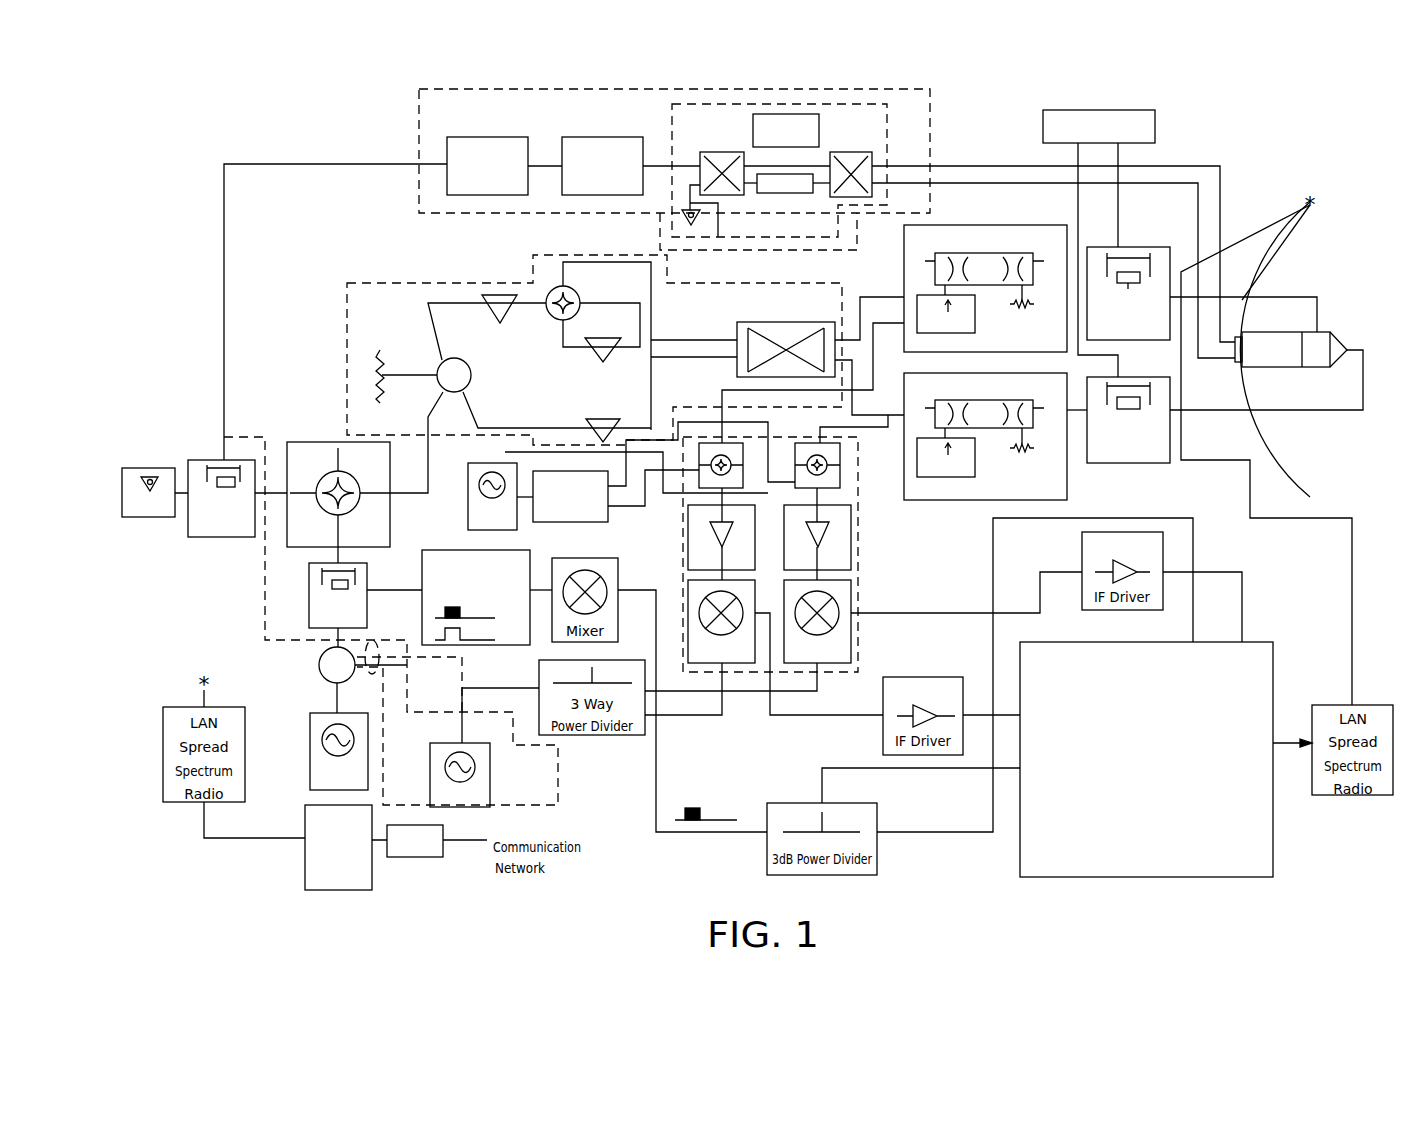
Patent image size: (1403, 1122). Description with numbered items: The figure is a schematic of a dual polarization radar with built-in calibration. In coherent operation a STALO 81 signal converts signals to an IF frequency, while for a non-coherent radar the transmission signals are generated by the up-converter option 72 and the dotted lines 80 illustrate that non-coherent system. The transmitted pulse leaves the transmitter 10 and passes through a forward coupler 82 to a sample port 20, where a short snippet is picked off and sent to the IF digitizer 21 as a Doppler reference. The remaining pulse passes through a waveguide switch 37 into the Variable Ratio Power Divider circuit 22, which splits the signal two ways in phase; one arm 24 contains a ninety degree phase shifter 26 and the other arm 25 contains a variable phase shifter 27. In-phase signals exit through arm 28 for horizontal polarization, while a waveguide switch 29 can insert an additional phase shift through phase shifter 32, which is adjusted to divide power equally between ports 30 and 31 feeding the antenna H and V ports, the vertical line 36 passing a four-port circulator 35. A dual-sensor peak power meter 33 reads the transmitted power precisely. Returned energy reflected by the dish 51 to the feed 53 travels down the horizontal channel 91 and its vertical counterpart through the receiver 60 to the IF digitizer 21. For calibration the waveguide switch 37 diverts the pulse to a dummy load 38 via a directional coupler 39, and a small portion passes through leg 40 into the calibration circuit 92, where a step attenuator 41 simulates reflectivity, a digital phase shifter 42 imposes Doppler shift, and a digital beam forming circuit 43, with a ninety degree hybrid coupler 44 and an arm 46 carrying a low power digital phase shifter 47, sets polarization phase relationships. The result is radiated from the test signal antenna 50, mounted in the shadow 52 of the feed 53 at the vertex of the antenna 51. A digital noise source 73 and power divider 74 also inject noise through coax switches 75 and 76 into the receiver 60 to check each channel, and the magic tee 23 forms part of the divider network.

The transmitter 10 is at (310, 737).
The sample port 20 is at (422, 553).
The IF digitizer 21 is at (1020, 862).
The Variable Ratio Power Divider (VRPD) circuit 22 is at (347, 340).
The magic tee 23 is at (437, 363).
The arm 24 is at (440, 332).
The arm 25 is at (470, 415).
The 90 degree phase shifter 26 is at (508, 318).
The variable phase shifter 27 is at (598, 418).
The arm 28 is at (880, 297).
The waveguide switch 29 is at (578, 293).
The port 30 is at (1140, 340).
The port 31 is at (1125, 463).
The phase shifter 32 is at (612, 358).
The dual-sensor peak power meter 33 is at (1155, 128).
The 4-port circulator 35 is at (985, 436).
The transmit line 36 is at (880, 415).
The waveguide switch 37 is at (338, 495).
The dummy load 38 is at (150, 517).
The directional coupler 39 is at (220, 537).
The leg 40 is at (224, 233).
The step attenuator 41 is at (497, 137).
The digital phase shifter 42 is at (602, 137).
The digital beam forming circuit 43 is at (887, 148).
The 90 degree hybrid coupler 44 is at (712, 152).
The arm 46 is at (762, 193).
The low power digital phase shifter 47 is at (805, 193).
The test signal antenna 50 is at (1252, 367).
The radar antenna (dish) 51 is at (1290, 474).
The shadow 52 is at (1256, 333).
The feed 53 is at (1336, 335).
The receiver 60 is at (858, 538).
The up-converter option 72 is at (558, 783).
The digital noise source 73 is at (505, 530).
The power divider 74 is at (595, 522).
The coax switch 75 is at (710, 443).
The coax switch 76 is at (810, 443).
The dotted lines 80 is at (375, 643).
The STALO 81 is at (430, 797).
The forward coupler 82 is at (309, 576).
The horizontal channel 91 is at (882, 428).
The calibration circuit 92 is at (419, 118).